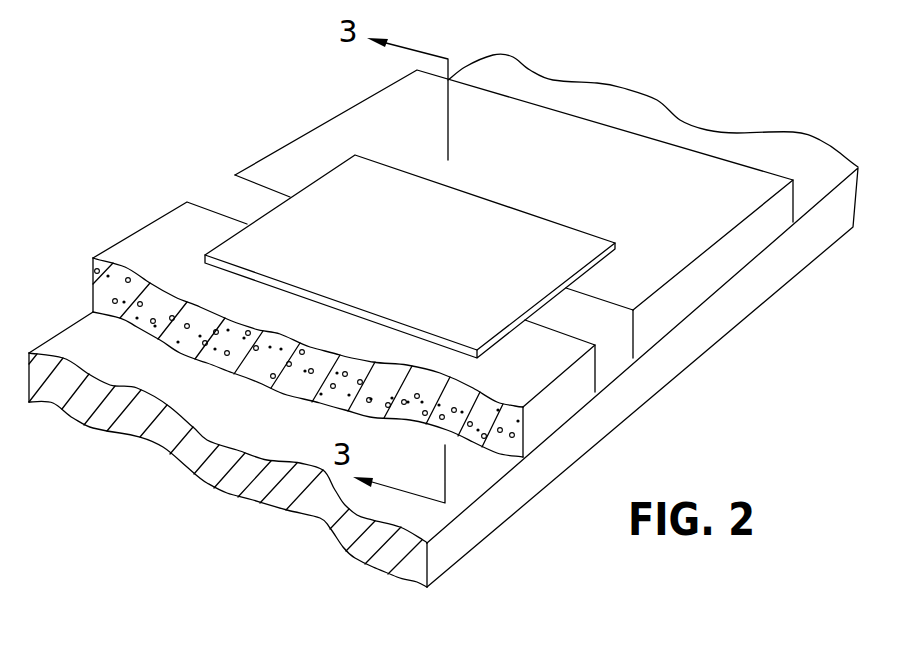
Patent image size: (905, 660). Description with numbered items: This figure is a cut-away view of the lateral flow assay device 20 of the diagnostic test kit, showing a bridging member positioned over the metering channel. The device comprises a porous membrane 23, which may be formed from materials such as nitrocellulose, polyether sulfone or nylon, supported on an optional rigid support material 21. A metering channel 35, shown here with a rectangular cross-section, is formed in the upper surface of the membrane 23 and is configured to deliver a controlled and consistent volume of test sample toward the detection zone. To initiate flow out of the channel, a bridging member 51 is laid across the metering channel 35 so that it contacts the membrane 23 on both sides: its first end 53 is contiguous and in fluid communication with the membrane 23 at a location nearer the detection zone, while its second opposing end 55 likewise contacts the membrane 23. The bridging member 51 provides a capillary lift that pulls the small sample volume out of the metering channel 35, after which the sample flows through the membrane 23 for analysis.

The lateral flow assay device 20 is at (800, 313).
The rigid support material 21 is at (797, 158).
The membrane 23 is at (148, 265).
The metering channel 35 is at (601, 327).
The bridging member 51 is at (410, 256).
The first end 53 is at (388, 325).
The second opposing end 55 is at (549, 219).